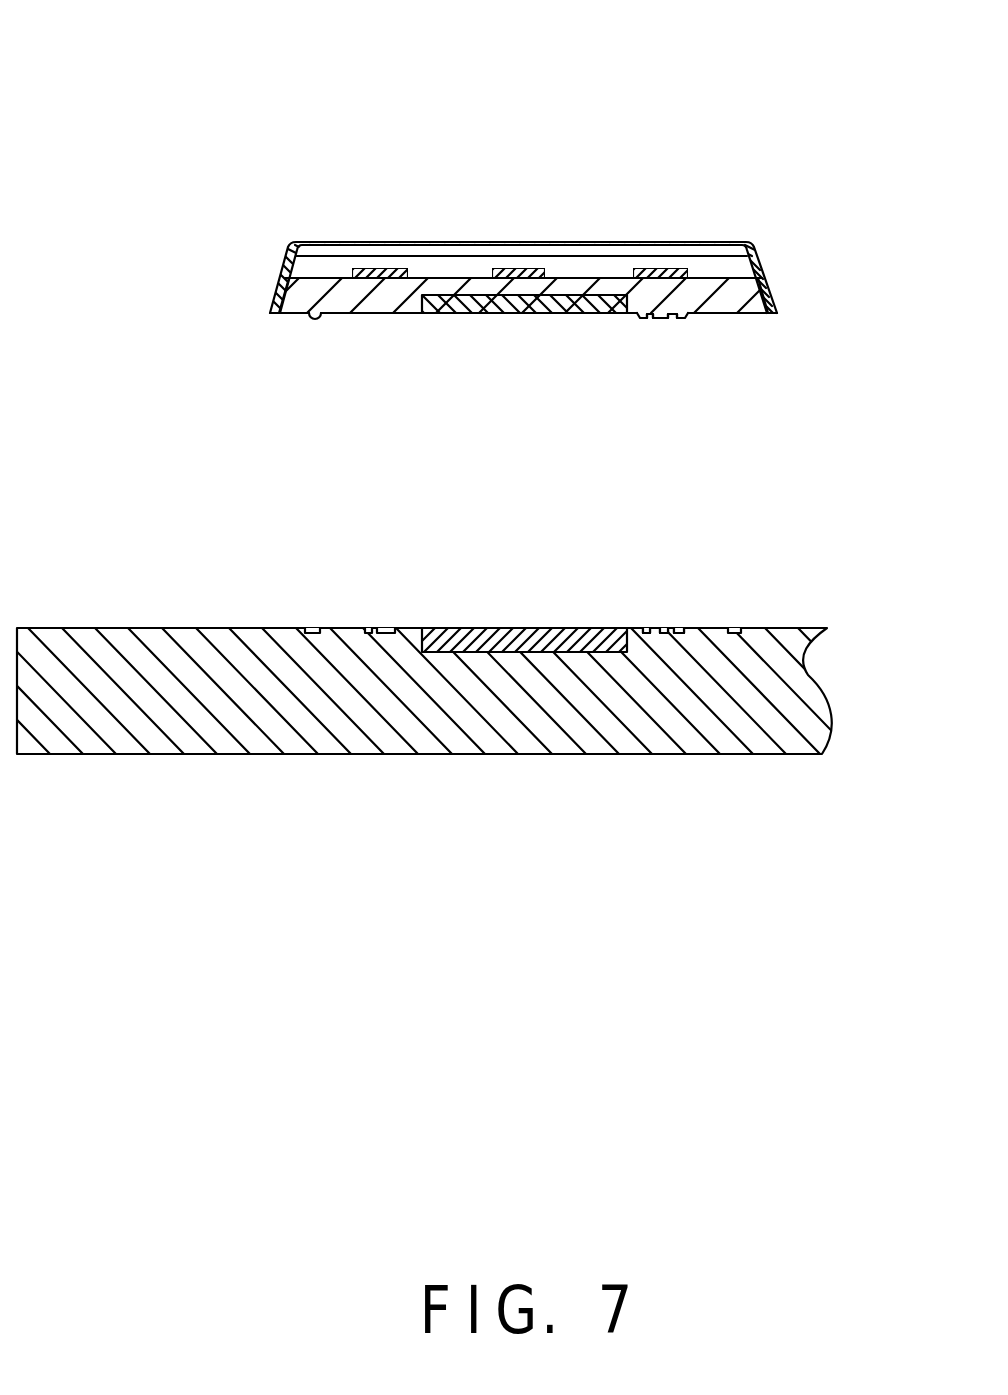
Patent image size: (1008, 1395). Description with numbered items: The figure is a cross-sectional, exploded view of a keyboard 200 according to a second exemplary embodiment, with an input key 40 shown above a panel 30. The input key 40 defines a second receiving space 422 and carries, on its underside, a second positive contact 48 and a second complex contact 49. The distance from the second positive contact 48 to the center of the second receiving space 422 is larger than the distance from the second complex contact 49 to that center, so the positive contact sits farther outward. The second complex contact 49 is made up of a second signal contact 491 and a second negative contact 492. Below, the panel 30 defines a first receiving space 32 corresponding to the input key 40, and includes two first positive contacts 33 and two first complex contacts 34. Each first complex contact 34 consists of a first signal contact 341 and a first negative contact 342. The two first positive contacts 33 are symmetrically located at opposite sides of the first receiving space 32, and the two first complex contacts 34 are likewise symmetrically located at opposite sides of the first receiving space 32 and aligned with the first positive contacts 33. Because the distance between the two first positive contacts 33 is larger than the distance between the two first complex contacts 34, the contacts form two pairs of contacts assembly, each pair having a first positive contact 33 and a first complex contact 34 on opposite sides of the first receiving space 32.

The keyboard 200 is at (235, 110).
The input key 40 is at (284, 253).
The second receiving space 422 is at (448, 295).
The second positive contact 48 is at (310, 321).
The second complex contact 49 is at (815, 318).
The second signal contact 491 is at (686, 318).
The second negative contact 492 is at (662, 318).
The panel 30 is at (780, 698).
The first receiving space 32 is at (602, 655).
The first positive contact 33 is at (312, 628).
The first complex contact 34 is at (386, 628).
The first signal contact 341 is at (685, 628).
The first negative contact 342 is at (658, 628).